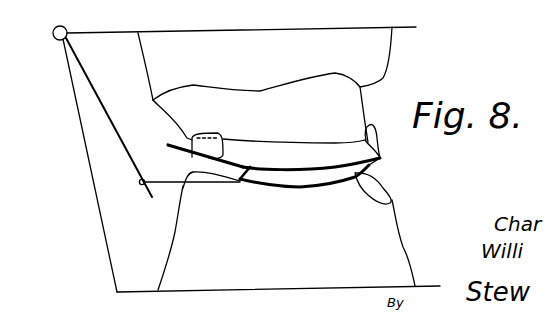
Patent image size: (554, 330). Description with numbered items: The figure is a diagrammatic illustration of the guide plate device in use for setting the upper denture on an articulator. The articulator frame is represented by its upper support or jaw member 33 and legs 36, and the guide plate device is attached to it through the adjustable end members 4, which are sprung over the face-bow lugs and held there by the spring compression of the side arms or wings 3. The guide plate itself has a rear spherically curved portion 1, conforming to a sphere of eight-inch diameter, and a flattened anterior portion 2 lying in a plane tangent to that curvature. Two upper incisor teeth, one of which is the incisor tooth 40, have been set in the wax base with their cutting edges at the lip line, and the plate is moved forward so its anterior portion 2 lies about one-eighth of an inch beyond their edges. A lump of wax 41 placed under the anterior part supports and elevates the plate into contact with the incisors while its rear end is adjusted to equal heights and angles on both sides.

The upper support or jaw member 33 is at (120, 38).
The legs 36 is at (96, 198).
The adjustable end members 4 is at (118, 141).
The side arms or wings 3 is at (173, 185).
The spherically curved portion 1 is at (273, 166).
The upper incisor tooth 40 is at (380, 158).
The flattened anterior portion 2 is at (381, 159).
The lump of wax 41 is at (390, 202).